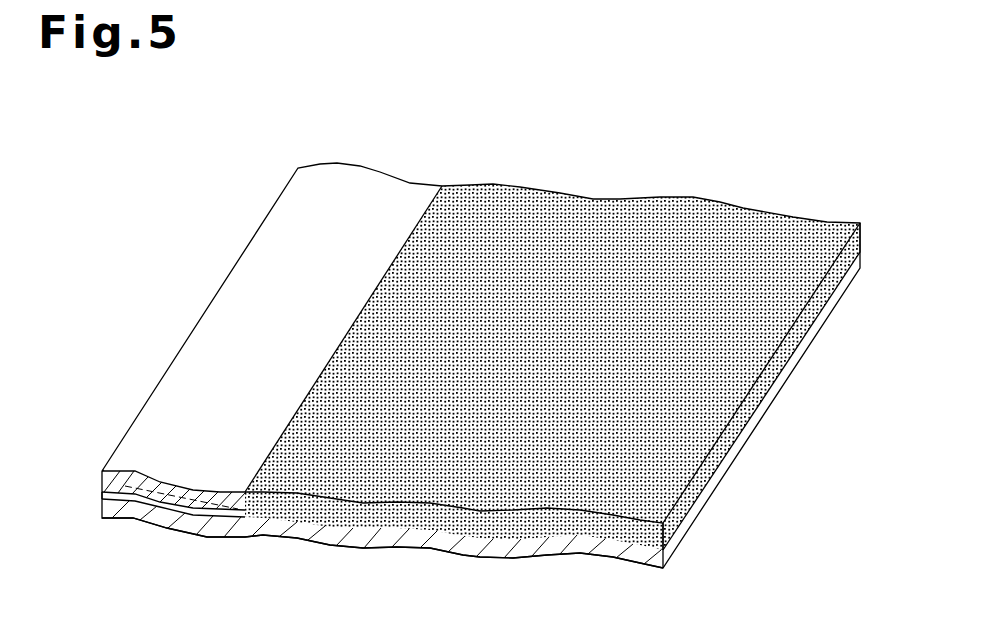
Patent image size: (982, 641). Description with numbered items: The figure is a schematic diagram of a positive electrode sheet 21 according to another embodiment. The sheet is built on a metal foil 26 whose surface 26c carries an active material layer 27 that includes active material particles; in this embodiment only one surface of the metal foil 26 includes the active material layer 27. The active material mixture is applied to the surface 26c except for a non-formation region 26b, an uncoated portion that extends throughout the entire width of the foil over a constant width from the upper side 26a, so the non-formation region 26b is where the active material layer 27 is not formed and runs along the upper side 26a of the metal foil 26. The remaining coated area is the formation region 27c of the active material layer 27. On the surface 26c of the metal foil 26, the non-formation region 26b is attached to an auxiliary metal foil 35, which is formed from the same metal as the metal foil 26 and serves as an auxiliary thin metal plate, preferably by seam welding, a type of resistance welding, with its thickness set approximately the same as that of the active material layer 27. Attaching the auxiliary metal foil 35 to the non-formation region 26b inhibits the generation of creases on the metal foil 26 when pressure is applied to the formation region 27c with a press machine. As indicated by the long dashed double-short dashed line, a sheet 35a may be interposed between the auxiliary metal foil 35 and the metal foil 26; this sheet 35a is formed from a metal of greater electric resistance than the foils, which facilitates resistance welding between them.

The positive electrode sheet 21 is at (829, 143).
The metal foil 26 is at (715, 476).
The upper side 26a is at (101, 508).
The non-formation region 26b is at (459, 170).
The surface 26c is at (634, 540).
The active material layer 27 is at (775, 337).
The formation region 27c is at (869, 205).
The auxiliary metal foil 35 is at (277, 231).
The sheet 35a is at (101, 469).